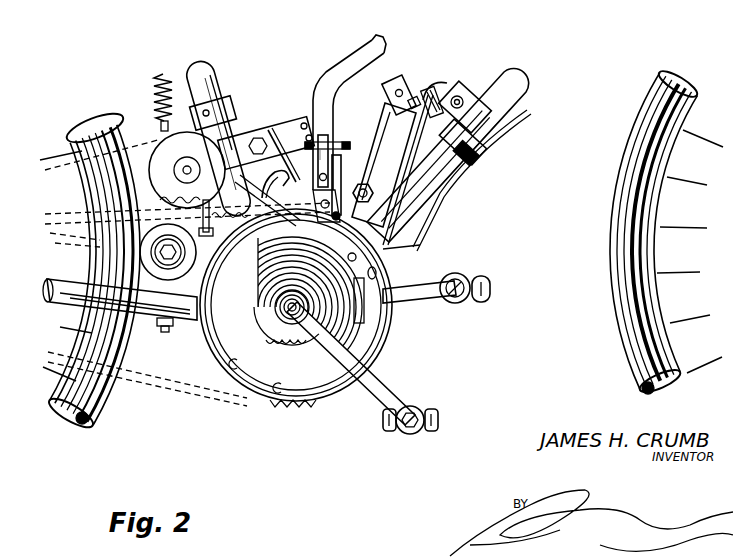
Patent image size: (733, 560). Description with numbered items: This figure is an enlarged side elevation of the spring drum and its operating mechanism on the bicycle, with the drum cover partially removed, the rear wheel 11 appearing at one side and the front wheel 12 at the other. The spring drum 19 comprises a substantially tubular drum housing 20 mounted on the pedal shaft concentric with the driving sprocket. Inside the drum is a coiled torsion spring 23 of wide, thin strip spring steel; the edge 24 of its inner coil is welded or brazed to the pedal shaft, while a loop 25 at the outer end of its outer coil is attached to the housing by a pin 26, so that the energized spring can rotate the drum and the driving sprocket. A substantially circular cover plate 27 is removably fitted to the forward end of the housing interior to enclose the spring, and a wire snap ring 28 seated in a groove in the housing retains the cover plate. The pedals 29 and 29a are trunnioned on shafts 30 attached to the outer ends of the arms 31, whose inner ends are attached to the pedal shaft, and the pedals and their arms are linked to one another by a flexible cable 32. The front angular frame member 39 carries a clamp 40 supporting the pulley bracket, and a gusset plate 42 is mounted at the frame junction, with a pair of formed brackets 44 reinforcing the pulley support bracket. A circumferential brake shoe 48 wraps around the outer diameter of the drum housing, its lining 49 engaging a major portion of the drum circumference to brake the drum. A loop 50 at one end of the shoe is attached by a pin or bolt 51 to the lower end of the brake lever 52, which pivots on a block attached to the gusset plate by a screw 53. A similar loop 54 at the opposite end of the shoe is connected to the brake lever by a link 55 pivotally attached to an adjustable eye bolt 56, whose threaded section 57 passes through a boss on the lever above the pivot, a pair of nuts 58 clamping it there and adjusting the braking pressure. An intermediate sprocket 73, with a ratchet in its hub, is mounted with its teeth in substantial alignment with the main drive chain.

The rear wheel 11 is at (90, 429).
The front wheel 12 is at (636, 372).
The spring drum 19 is at (382, 352).
The drum housing 20 is at (238, 390).
The coiled torsion spring 23 is at (368, 325).
The edge of inner coil 24 is at (278, 303).
The loop 25 is at (388, 265).
The pin 26 is at (393, 247).
The cover plate 27 is at (181, 372).
The snap ring 28 is at (277, 383).
The pedal 29 is at (452, 416).
The pedal 29a is at (474, 302).
The shaft 30 is at (462, 284).
The arm 31 is at (368, 394).
The flexible cable 32 is at (405, 202).
The front angular frame member 39 is at (518, 80).
The clamp 40 is at (498, 136).
The gusset plate 42 is at (427, 123).
The formed brackets 44 is at (463, 170).
The circumferential brake shoe 48 is at (236, 232).
The lining 49 is at (206, 320).
The loop 50 is at (335, 216).
The pin or bolt 51 is at (282, 165).
The brake lever 52 is at (345, 58).
The screw 53 is at (320, 175).
The loop 54 is at (248, 179).
The link 55 is at (266, 143).
The adjustable eye bolt 56 is at (262, 140).
The threaded section 57 is at (339, 146).
The nuts 58 is at (318, 150).
The intermediate sprocket 73 is at (152, 168).